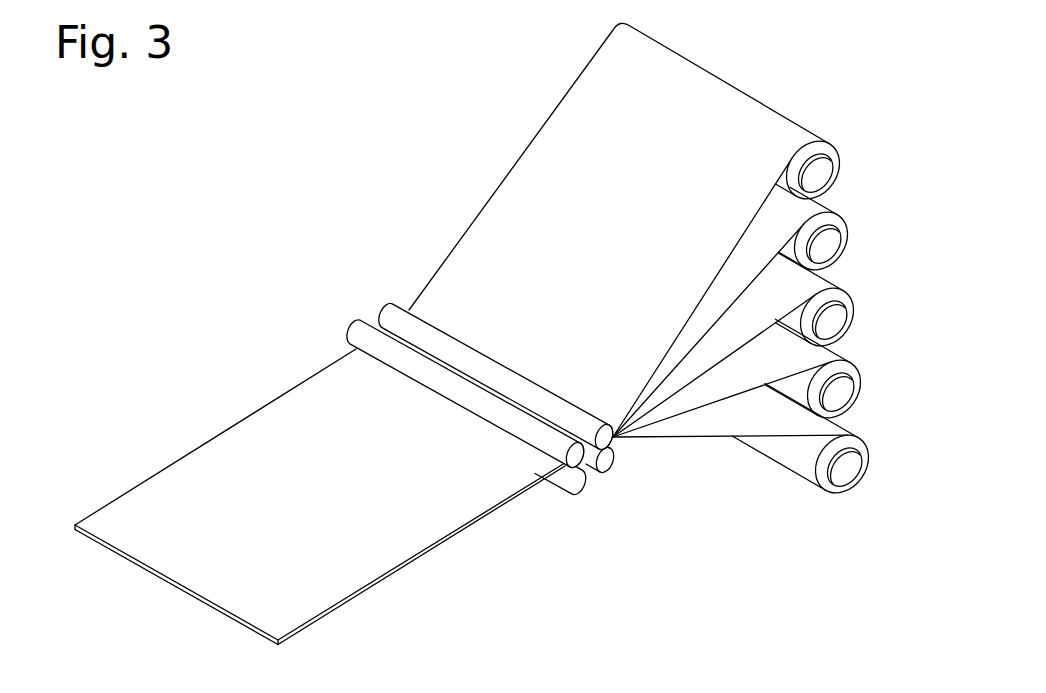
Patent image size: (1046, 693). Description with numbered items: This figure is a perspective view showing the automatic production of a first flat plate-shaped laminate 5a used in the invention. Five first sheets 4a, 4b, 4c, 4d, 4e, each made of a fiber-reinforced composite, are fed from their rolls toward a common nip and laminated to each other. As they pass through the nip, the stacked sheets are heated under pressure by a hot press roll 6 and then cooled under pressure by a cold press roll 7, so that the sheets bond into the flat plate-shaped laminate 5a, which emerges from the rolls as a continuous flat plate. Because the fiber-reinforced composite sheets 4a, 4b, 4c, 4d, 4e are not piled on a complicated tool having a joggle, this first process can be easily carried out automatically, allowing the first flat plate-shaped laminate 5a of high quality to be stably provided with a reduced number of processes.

The first sheet 4a is at (572, 130).
The first sheet 4b is at (758, 243).
The first sheet 4c is at (766, 307).
The first sheet 4d is at (772, 362).
The first sheet 4e is at (722, 410).
The first flat plate-shaped laminate 5a is at (242, 490).
The hot press roll 6 is at (603, 467).
The cold press roll 7 is at (573, 488).